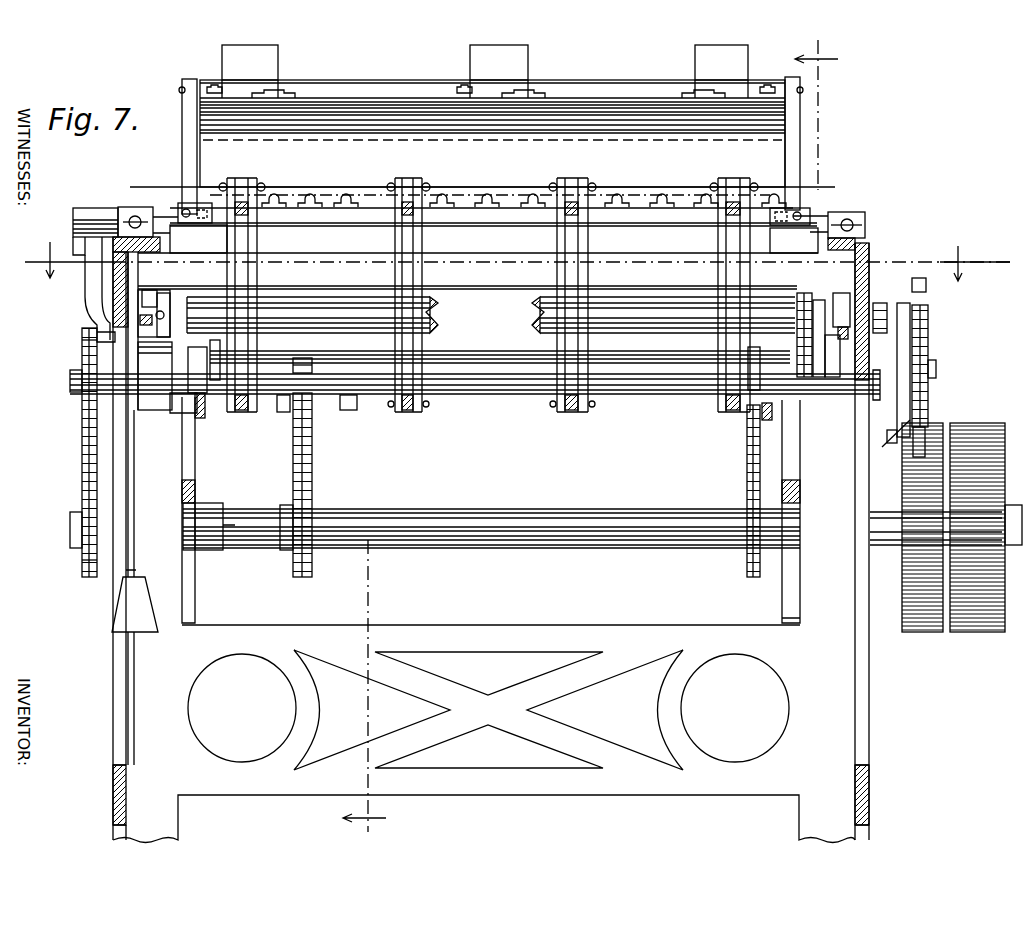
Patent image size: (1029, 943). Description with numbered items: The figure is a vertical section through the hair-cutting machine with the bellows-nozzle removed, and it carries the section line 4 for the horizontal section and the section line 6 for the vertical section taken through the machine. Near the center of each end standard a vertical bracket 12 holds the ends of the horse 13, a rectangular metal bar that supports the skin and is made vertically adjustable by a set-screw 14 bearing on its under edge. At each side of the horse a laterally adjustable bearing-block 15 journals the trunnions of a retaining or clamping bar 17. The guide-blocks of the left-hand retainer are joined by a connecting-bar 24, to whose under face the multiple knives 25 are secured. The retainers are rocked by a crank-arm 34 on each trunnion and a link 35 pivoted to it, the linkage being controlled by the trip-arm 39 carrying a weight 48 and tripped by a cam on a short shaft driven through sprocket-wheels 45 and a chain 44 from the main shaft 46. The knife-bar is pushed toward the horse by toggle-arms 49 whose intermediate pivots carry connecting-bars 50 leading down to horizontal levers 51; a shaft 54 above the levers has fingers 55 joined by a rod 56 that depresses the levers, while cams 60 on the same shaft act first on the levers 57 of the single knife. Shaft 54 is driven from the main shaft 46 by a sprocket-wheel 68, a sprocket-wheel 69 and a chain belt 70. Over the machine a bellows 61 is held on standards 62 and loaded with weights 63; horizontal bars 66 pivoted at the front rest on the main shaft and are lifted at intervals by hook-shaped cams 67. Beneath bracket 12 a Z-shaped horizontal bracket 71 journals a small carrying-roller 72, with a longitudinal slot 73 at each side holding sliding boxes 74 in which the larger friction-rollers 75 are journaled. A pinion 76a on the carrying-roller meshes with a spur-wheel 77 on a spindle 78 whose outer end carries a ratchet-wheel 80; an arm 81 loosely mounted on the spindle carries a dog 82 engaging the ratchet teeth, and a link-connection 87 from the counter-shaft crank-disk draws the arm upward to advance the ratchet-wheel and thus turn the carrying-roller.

The section line 4 4 is at (508, 261).
The section line 6 6 is at (590, 437).
The vertical bracket 12 is at (138, 300).
The horse 13 is at (478, 271).
The set-screw 14 is at (153, 328).
The bearing-block 15 is at (142, 213).
The retaining or clamping bar 17 is at (482, 219).
The connecting-bar 24 is at (403, 209).
The multiple knives 25 is at (695, 209).
The crank-arm 34 is at (97, 212).
The link 35 is at (88, 300).
The trip-arm 39 is at (918, 280).
The chain 44 is at (315, 468).
The sprocket-wheels 45 is at (282, 505).
The main shaft 46 is at (592, 519).
The weight 48 is at (135, 587).
The toggle-arms 49 is at (243, 188).
The connecting-bars 50 is at (248, 290).
The horizontal lever 51 is at (410, 412).
The shaft 54 is at (508, 392).
The fingers 55 is at (748, 370).
The rod 56 is at (500, 349).
The levers 57 is at (207, 418).
The cams 60 is at (203, 356).
The bellows 61 is at (492, 133).
The standards 62 is at (184, 160).
The weights 63 is at (485, 71).
The horizontal bars 66 is at (196, 495).
The hook-shaped cams 67 is at (200, 580).
The sprocket-wheel 68 is at (84, 355).
The sprocket-wheel 69 is at (82, 556).
The chain belt 70 is at (84, 440).
The horizontal bracket 71 is at (160, 333).
The carrying-roller 72 is at (495, 310).
The longitudinal slot 73 is at (831, 335).
The boxes 74 is at (848, 335).
The friction-roller 75 is at (663, 315).
The pinion 76a is at (815, 288).
The spur-wheel 77 is at (834, 334).
The spindle 78 is at (840, 356).
The ratchet-wheel 80 is at (930, 333).
The arm 81 is at (747, 493).
The dog 82 is at (918, 458).
The link-connection 87 is at (900, 355).